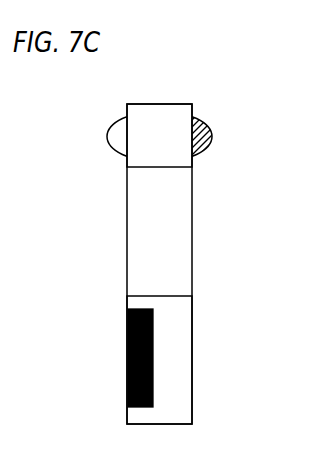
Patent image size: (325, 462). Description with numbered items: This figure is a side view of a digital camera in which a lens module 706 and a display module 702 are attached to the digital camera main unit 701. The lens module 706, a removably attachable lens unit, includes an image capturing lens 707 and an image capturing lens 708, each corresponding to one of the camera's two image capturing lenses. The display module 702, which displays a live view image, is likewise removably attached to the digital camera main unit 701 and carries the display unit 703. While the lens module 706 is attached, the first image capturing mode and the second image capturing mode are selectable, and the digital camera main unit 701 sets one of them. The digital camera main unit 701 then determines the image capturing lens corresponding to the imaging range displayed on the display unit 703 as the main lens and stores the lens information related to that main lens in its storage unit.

The digital camera main unit 701 is at (137, 252).
The display module 702 is at (187, 365).
The display unit 703 is at (127, 368).
The lens module 706 is at (155, 110).
The image capturing lens 707 is at (120, 138).
The image capturing lens 708 is at (212, 133).